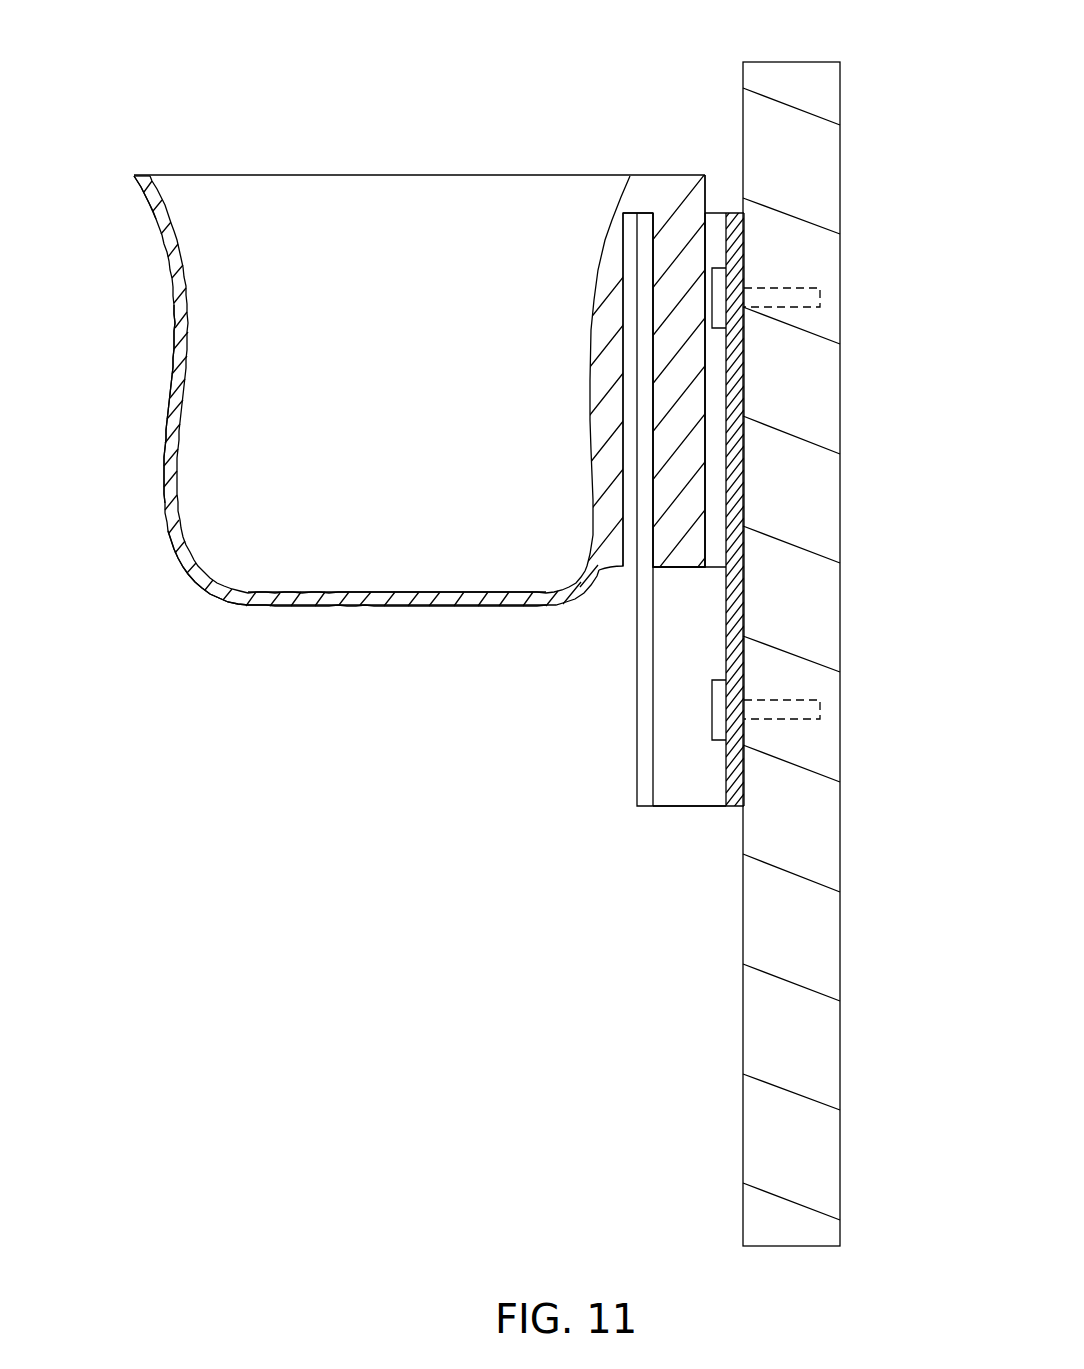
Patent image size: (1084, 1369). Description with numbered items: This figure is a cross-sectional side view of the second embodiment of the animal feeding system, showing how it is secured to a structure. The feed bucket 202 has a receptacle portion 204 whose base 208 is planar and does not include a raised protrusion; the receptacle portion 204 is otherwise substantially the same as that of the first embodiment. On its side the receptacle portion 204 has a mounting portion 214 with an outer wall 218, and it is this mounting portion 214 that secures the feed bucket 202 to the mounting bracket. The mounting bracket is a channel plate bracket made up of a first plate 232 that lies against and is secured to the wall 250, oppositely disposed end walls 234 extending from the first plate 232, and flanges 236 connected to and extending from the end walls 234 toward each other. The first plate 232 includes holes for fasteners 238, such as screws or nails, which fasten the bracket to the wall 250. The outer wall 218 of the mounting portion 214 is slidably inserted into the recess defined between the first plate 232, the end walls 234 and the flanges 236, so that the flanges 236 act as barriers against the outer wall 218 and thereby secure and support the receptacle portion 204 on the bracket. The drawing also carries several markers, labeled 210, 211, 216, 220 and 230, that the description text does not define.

The feed bucket 202 is at (168, 374).
The receptacle portion 204 is at (182, 563).
The base 208 is at (372, 607).
The container side wall 210 is at (176, 445).
The container top rim 211 is at (265, 174).
The mounting portion 214 is at (708, 472).
The mounting block 216 is at (667, 174).
The outer wall 218 is at (680, 366).
The slot 220 is at (624, 567).
The rim corner 230 is at (139, 174).
The first plate 232 is at (722, 800).
The end walls 234 is at (668, 790).
The flanges 236 is at (636, 768).
The fasteners 238 is at (790, 288).
The wall 250 is at (821, 55).